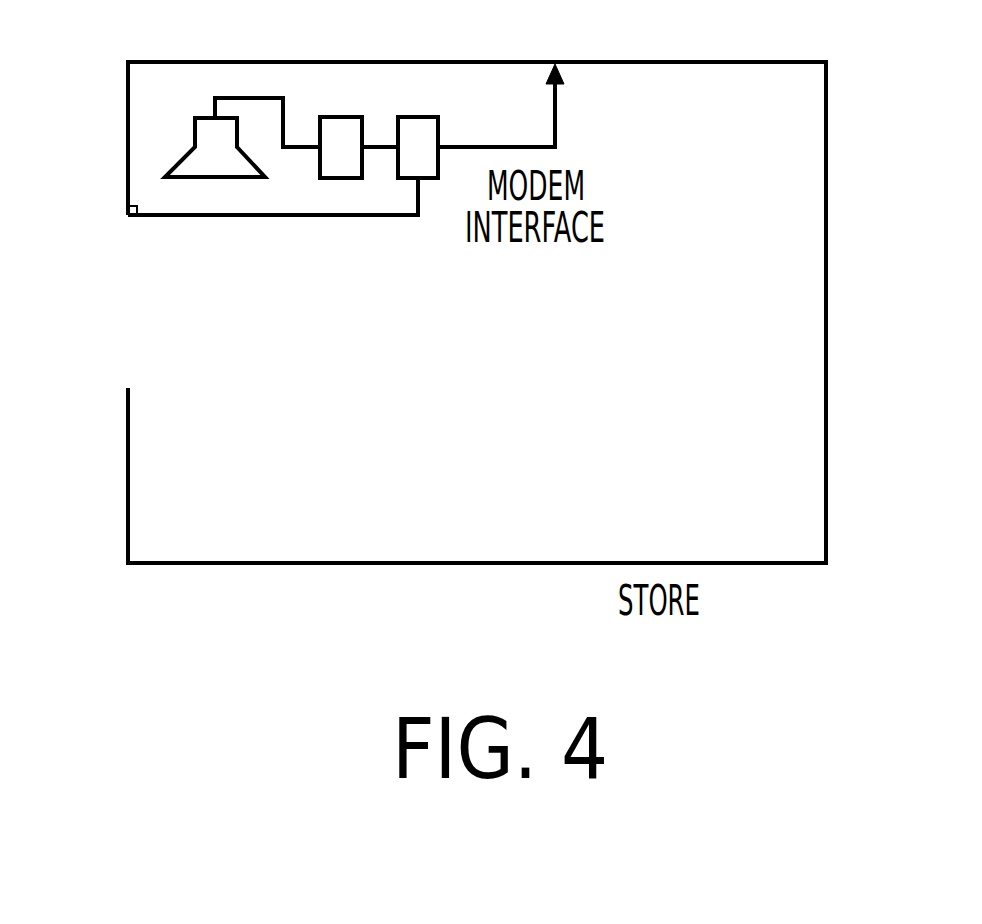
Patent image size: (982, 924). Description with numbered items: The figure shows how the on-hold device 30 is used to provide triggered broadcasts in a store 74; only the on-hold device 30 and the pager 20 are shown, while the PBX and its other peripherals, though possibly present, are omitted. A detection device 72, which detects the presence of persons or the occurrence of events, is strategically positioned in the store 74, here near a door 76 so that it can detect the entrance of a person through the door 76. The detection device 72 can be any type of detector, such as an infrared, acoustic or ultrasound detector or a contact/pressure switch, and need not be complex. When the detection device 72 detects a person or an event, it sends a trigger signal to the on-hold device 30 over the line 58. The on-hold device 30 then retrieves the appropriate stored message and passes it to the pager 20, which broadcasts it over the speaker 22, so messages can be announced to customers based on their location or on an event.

The pager 20 is at (342, 117).
The speaker 22 is at (202, 138).
The on-hold device 30 is at (418, 117).
The line 58 is at (307, 218).
The detection device 72 is at (128, 210).
The store 74 is at (826, 158).
The door 76 is at (137, 327).